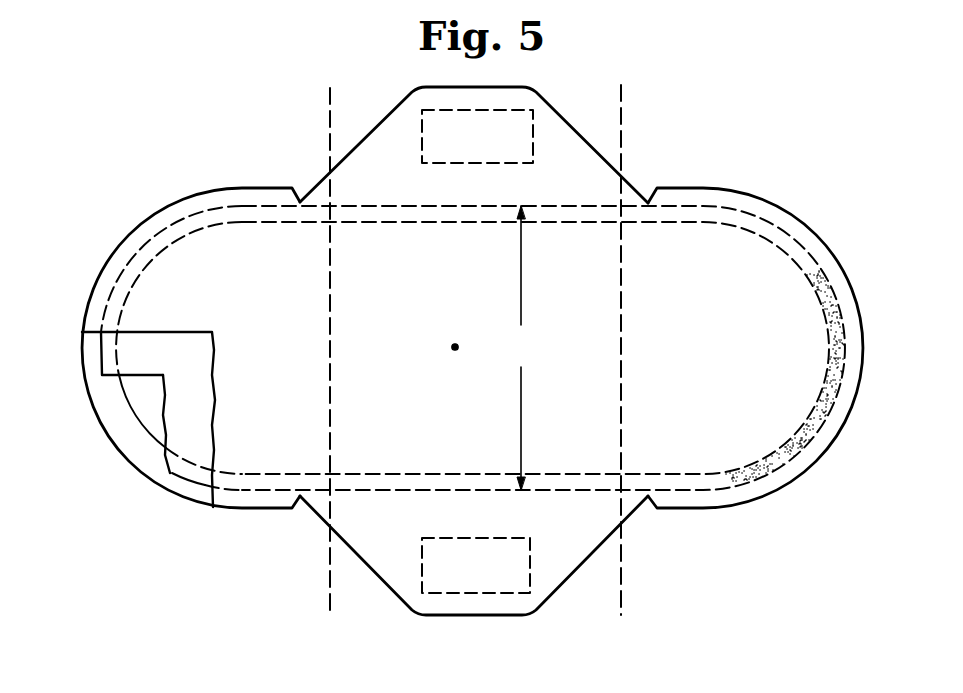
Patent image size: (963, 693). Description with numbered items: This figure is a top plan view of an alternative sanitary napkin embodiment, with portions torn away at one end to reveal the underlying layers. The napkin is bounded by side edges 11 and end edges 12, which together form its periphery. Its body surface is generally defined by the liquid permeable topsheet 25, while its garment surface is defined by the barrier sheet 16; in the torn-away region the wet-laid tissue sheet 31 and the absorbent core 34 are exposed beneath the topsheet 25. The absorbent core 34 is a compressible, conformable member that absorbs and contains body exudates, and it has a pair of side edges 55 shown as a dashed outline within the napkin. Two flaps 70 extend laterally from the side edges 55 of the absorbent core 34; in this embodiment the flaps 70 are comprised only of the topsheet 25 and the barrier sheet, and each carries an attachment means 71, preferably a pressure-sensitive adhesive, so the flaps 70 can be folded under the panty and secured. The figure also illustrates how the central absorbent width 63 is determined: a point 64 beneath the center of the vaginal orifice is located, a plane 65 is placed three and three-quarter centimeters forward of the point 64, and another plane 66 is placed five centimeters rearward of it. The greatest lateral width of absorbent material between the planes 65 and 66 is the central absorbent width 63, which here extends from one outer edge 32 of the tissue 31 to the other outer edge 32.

The side edges 11 is at (675, 188).
The end edges 12 is at (840, 260).
The barrier sheet 16 is at (127, 443).
The liquid permeable topsheet 25 is at (240, 237).
The wet-laid tissue sheet 31 is at (125, 348).
The outer edge of the tissue 32 is at (563, 205).
The absorbent core 34 is at (138, 398).
The side edges of the absorbent core 55 is at (275, 473).
The central absorbent width 63 is at (522, 348).
The point 64 is at (455, 347).
The plane 65 is at (330, 132).
The plane 66 is at (622, 127).
The flaps 70 is at (397, 130).
The attachment means 71 is at (453, 595).